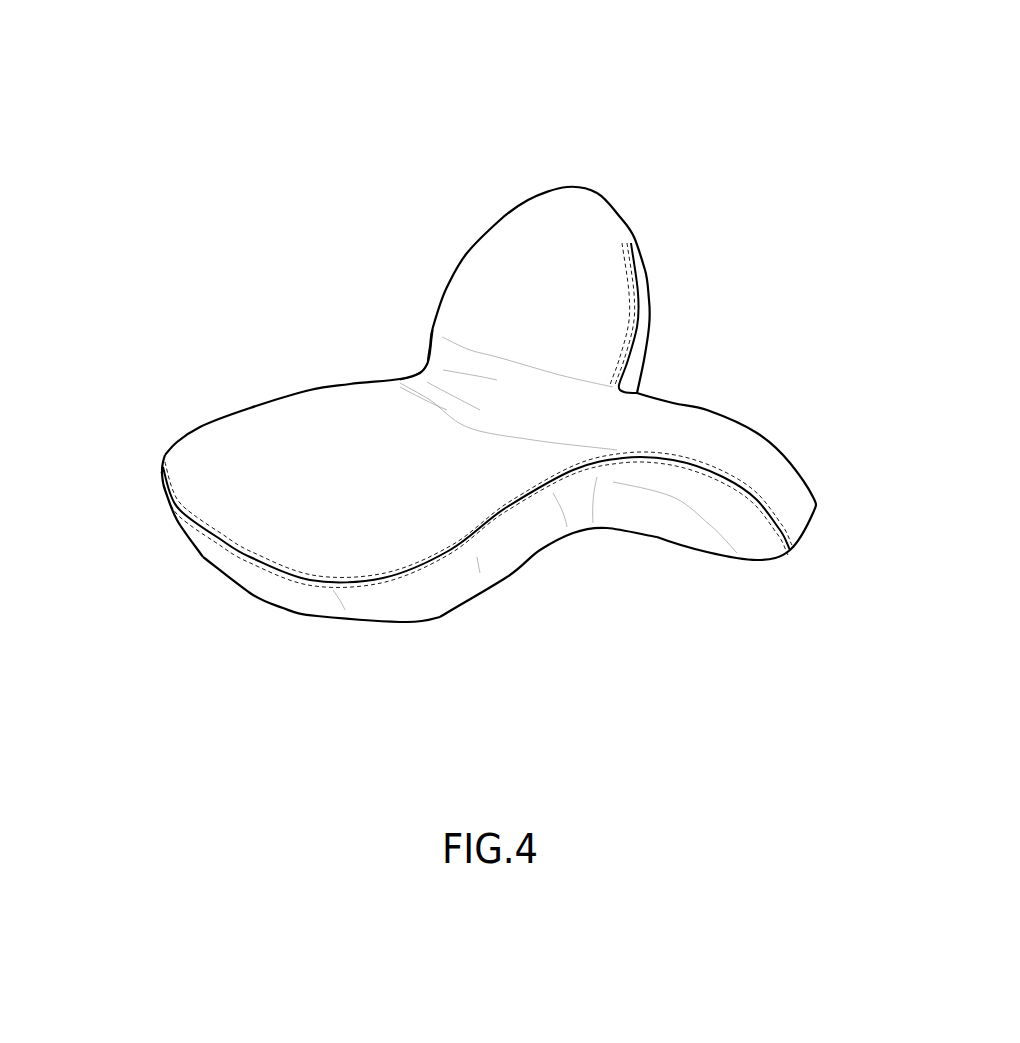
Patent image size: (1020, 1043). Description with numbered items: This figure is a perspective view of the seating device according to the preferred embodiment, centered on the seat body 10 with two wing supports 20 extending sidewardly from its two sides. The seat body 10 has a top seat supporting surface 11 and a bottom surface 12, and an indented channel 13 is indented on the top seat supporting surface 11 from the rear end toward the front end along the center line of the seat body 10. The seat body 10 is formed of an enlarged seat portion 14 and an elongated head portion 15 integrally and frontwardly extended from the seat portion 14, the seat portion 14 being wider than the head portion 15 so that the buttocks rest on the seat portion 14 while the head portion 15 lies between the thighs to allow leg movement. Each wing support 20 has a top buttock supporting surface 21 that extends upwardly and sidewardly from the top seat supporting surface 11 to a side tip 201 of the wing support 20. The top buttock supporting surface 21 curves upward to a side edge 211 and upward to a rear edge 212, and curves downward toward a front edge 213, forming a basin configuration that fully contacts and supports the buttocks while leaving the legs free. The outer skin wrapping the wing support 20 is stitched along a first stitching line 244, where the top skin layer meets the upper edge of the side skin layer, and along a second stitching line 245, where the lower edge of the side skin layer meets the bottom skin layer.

The seat body 10 is at (348, 128).
The top seat supporting surface 11 is at (452, 474).
The bottom surface 12 is at (548, 557).
The indented channel 13 is at (468, 365).
The seat portion 14 is at (393, 412).
The head portion 15 is at (705, 438).
The wing support 20 is at (765, 178).
The top buttock supporting surface 21 is at (296, 517).
The side tip 201 is at (607, 197).
The side edge 211 is at (577, 187).
The rear edge 212 is at (527, 192).
The front edge 213 is at (640, 308).
The first stitching line 244 is at (173, 477).
The second stitching line 245 is at (352, 628).